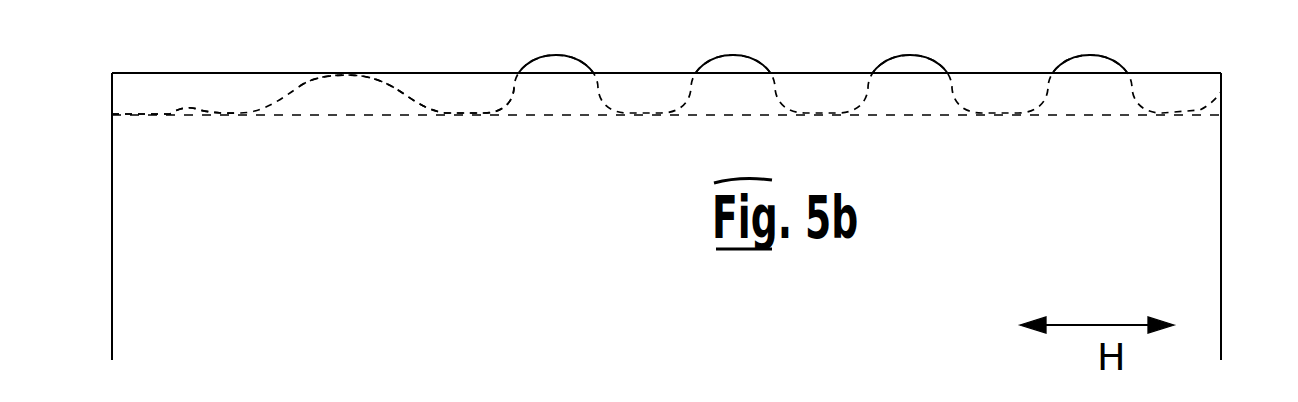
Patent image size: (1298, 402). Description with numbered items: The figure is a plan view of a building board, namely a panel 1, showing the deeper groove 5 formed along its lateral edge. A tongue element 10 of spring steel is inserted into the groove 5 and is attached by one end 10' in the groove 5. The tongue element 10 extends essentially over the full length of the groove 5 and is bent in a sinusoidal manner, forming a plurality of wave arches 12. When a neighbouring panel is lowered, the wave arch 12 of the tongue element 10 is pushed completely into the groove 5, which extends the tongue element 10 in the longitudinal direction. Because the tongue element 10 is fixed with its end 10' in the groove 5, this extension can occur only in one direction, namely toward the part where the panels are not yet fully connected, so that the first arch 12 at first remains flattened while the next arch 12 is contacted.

The panel 1 is at (1200, 231).
The groove 5 is at (574, 103).
The tongue element 10 is at (396, 168).
The end of the tongue element 10' is at (176, 148).
The wave arch 12 is at (346, 72).